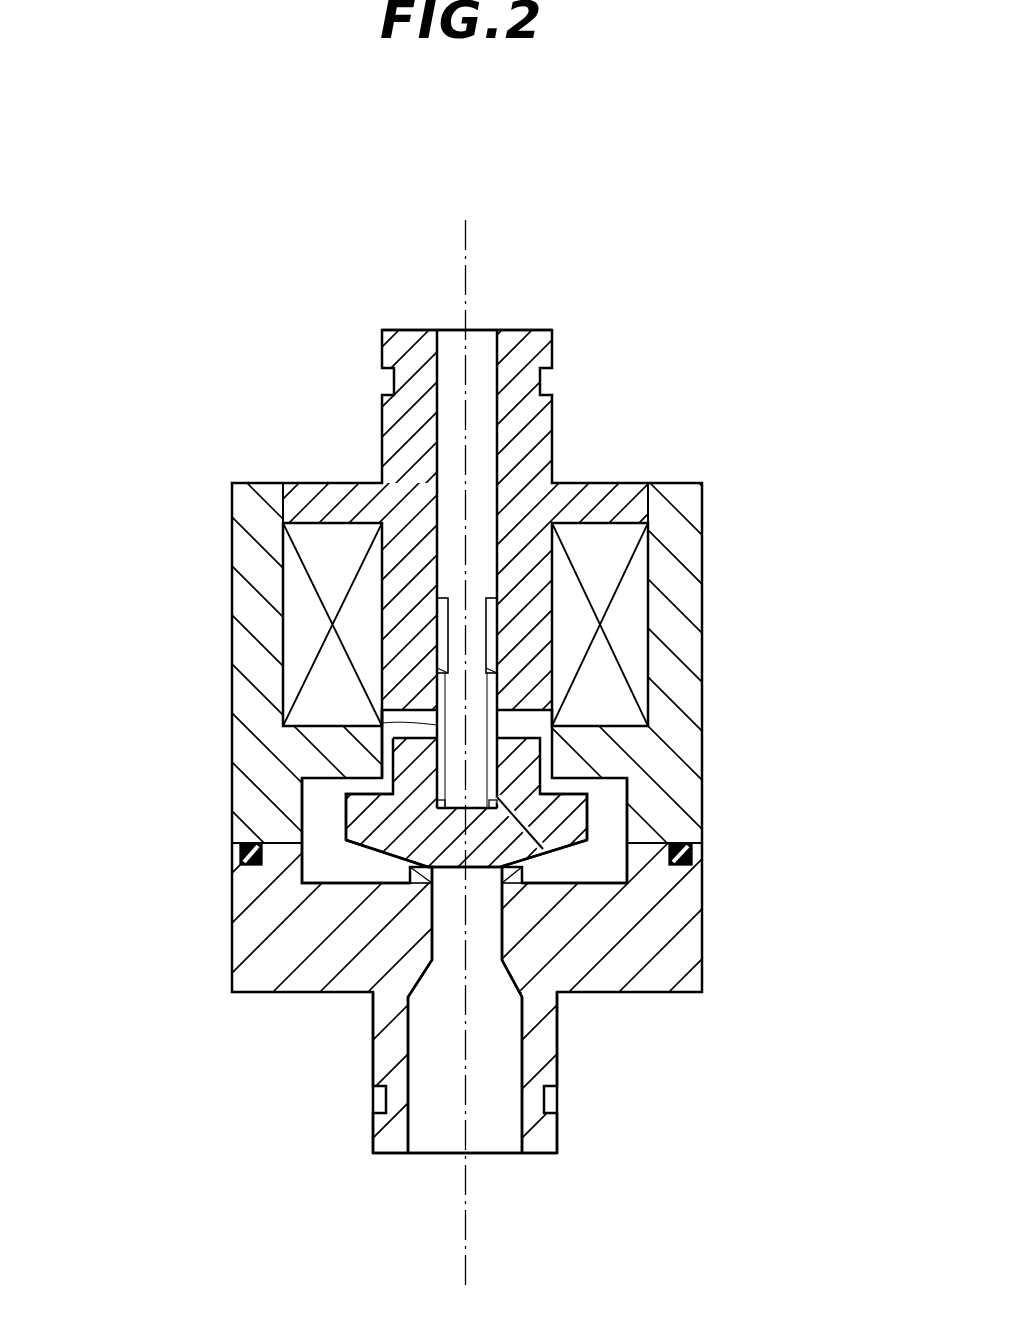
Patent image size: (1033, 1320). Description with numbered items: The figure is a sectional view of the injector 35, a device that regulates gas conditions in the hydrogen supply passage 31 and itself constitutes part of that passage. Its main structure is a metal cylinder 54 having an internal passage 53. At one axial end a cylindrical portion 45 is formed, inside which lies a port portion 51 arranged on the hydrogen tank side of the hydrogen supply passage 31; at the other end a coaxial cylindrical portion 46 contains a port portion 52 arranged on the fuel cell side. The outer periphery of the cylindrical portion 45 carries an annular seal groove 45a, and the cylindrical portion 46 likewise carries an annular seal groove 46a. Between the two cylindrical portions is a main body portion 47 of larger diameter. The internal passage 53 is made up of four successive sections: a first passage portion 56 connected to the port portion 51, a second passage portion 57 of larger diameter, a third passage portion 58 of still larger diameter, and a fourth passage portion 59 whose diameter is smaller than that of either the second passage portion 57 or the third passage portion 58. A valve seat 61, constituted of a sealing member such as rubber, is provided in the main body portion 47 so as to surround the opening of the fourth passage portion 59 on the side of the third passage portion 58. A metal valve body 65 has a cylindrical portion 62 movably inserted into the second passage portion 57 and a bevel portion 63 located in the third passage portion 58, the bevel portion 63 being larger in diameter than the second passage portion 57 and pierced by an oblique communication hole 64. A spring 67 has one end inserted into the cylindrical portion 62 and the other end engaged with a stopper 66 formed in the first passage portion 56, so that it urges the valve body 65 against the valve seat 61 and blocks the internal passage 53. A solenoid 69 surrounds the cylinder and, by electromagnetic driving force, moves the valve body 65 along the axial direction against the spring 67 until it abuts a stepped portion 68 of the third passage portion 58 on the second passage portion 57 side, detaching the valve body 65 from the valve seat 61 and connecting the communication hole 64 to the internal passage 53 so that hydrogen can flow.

The hydrogen supply passage 31 is at (467, 283).
The injector 35 is at (780, 461).
The cylindrical portion 45 is at (382, 430).
The annular seal groove 45a is at (392, 380).
The cylindrical portion 46 is at (373, 1045).
The annular seal groove 46a is at (552, 1100).
The main body portion 47 is at (232, 553).
The port portion 51 is at (447, 330).
The port portion 52 is at (418, 1155).
The internal passage 53 is at (445, 912).
The cylinder 54 is at (702, 718).
The first passage portion 56 is at (497, 467).
The second passage portion 57 is at (383, 757).
The third passage portion 58 is at (315, 810).
The fourth passage portion 59 is at (504, 933).
The valve seat 61 is at (503, 885).
The cylindrical portion 62 is at (540, 765).
The bevel portion 63 is at (590, 803).
The communication hole 64 is at (545, 858).
The valve body 65 is at (356, 851).
The stopper 66 is at (493, 627).
The spring 67 is at (435, 725).
The stepped portion 68 is at (345, 795).
The solenoid 69 is at (636, 583).